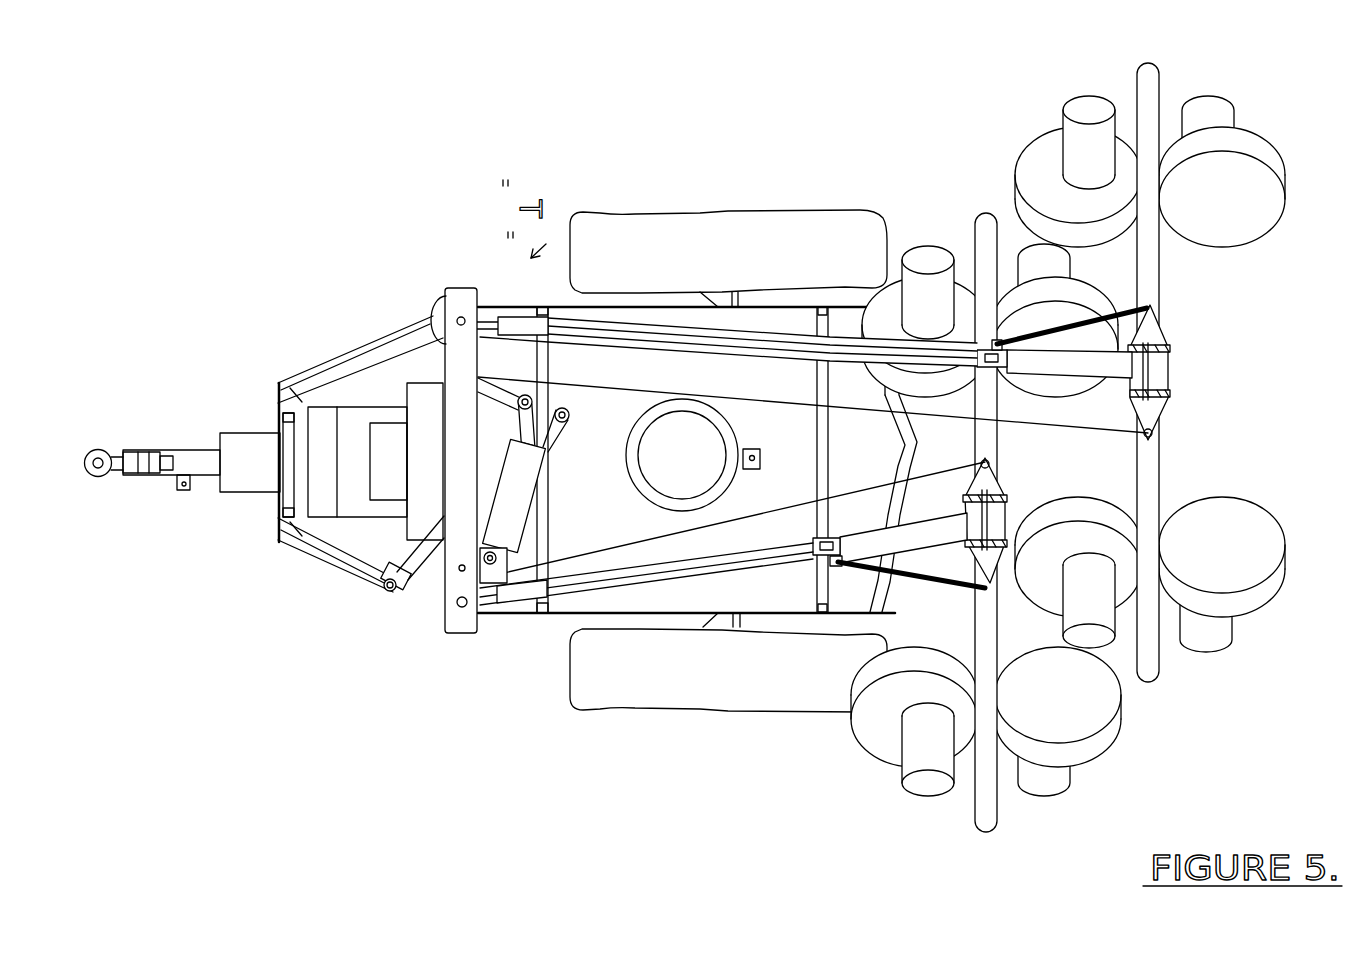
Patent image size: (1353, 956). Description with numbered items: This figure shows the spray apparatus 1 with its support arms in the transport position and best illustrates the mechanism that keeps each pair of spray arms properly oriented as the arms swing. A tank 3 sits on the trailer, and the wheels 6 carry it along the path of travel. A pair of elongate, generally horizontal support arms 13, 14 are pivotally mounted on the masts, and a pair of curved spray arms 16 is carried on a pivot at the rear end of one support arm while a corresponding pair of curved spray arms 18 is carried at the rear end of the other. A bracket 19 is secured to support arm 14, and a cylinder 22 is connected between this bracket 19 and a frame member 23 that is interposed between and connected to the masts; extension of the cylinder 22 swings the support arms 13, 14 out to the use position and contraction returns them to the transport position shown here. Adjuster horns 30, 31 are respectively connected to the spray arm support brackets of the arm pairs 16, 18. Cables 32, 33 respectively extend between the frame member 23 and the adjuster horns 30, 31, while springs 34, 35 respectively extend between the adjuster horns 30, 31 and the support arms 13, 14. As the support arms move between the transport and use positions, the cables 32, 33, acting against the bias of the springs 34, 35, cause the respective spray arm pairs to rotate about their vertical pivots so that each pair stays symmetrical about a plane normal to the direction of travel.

The apparatus 1 is at (1100, 718).
The tank 3 is at (716, 714).
The wheel 6 is at (1284, 199).
The support arm 13 is at (933, 532).
The support arm 14 is at (1047, 363).
The curved spray arms 16 is at (987, 830).
The curved spray arms 18 is at (1149, 78).
The bracket 19 is at (708, 299).
The cylinder 22 is at (550, 459).
The frame member 23 is at (465, 550).
The adjuster horn 30 is at (987, 478).
The adjuster horn 31 is at (1150, 413).
The cable 32 is at (733, 507).
The cable 33 is at (730, 397).
The spring 34 is at (930, 583).
The spring 35 is at (1145, 307).